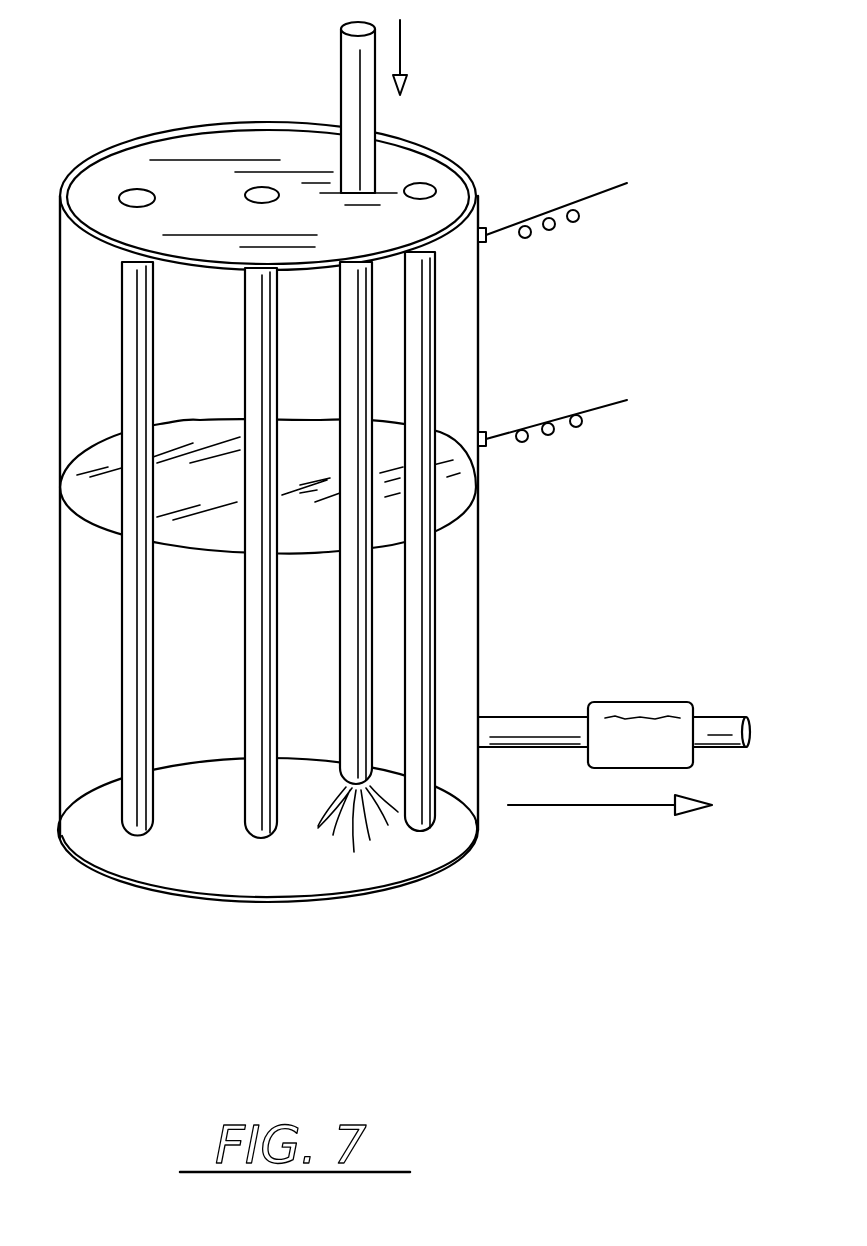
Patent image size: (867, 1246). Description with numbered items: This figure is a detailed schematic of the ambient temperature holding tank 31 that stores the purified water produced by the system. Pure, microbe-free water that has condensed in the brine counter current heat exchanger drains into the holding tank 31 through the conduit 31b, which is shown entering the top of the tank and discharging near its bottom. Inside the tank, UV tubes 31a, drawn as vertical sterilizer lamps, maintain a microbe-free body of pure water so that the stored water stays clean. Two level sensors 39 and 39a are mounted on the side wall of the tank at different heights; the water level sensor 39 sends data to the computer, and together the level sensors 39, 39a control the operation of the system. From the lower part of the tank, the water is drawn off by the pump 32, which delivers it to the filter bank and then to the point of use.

The holding tank 31 is at (408, 882).
The UV tubes 31a is at (435, 670).
The conduit 31b is at (372, 607).
The pump 32 is at (633, 700).
The level sensor 39 is at (485, 232).
The level sensor 39a is at (487, 433).